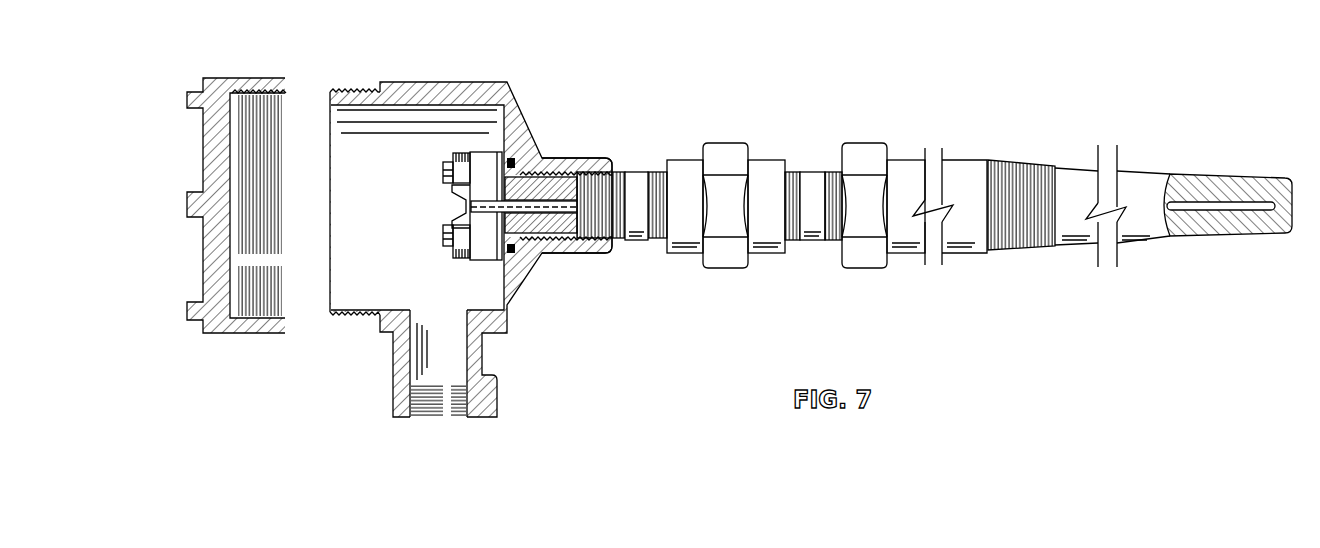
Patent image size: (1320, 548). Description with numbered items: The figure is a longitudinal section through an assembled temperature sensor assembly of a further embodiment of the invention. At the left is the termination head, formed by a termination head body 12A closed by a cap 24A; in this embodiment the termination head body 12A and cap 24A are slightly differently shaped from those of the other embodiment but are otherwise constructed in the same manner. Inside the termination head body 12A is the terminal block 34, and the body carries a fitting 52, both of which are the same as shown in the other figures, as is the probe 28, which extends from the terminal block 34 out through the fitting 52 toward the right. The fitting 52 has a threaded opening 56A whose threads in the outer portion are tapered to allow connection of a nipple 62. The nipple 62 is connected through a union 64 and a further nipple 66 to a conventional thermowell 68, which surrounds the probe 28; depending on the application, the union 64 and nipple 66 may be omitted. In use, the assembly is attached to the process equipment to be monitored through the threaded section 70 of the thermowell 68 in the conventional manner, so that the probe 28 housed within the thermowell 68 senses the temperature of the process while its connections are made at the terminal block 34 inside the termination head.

The cap 24A is at (242, 78).
The termination head body 12A is at (423, 79).
The terminal block 34 is at (488, 150).
The fitting 52 is at (541, 156).
The probe 28 is at (550, 238).
The threaded opening 56A is at (590, 176).
The nipple 62 is at (643, 173).
The union 64 is at (777, 160).
The nipple 66 is at (815, 172).
The thermowell 68 is at (962, 160).
The threaded section 70 is at (1025, 160).